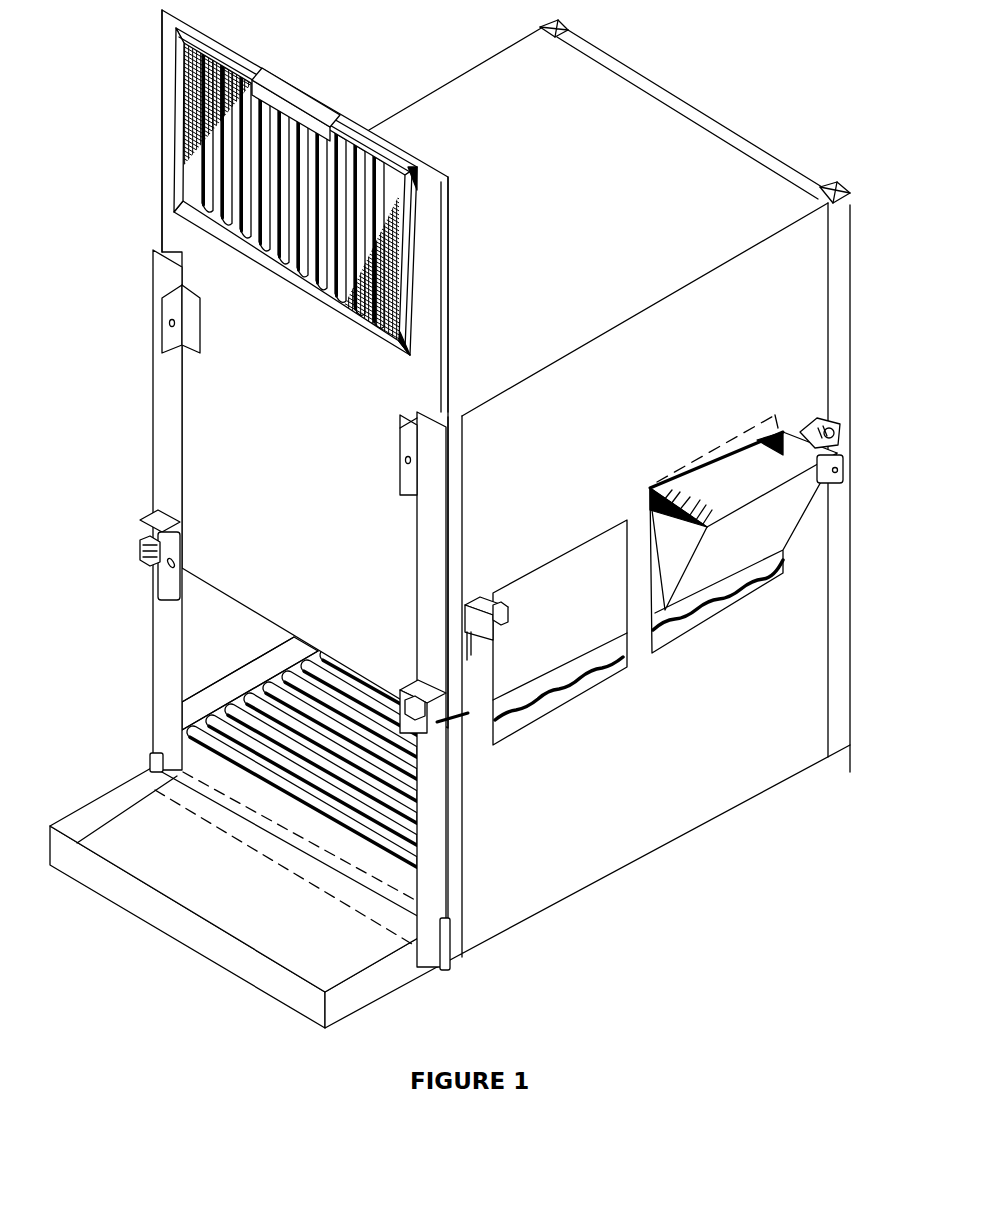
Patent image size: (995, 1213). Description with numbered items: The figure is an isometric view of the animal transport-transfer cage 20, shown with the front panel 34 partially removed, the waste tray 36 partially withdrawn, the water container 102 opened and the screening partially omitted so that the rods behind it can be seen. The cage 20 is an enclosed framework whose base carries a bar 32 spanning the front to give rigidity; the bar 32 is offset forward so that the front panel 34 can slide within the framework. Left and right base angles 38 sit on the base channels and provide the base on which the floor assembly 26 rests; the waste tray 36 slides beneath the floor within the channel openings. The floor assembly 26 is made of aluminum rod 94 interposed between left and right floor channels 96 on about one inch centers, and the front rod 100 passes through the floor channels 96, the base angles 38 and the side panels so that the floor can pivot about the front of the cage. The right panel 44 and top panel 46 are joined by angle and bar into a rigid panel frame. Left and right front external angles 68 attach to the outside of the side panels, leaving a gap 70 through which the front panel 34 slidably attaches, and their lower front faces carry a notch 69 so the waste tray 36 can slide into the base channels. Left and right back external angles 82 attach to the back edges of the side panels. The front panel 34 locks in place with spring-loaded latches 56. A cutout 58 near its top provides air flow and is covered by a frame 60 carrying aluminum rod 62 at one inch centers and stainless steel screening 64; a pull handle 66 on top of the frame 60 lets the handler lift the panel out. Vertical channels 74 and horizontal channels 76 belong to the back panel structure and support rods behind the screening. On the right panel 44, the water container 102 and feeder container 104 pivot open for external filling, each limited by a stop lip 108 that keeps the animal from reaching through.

The animal transport-transfer cage 20 is at (146, 399).
The floor assembly 26 is at (398, 808).
The bar 32 is at (264, 862).
The front panel 34 is at (282, 433).
The waste tray 36 is at (345, 1009).
The base angles 38 is at (216, 689).
The right panel 44 is at (674, 755).
The top panel 46 is at (562, 210).
The spring-loaded latches 56 is at (141, 576).
The cutout 58 is at (345, 125).
The frame 60 is at (186, 33).
The aluminum rod 62 is at (289, 276).
The stainless steel screening 64 is at (384, 343).
The pull handle 66 is at (263, 92).
The front external angles 68 is at (161, 675).
The notch 69 is at (153, 763).
The gap 70 is at (155, 249).
The vertical channels 74 is at (571, 22).
The horizontal channels 76 is at (688, 113).
The back external angles 82 is at (846, 683).
The aluminum rod 94 is at (261, 686).
The floor channels 96 is at (180, 737).
The front rod 100 is at (352, 861).
The water container 102 is at (794, 522).
The feeder container 104 is at (553, 582).
The stop lip 108 is at (742, 428).